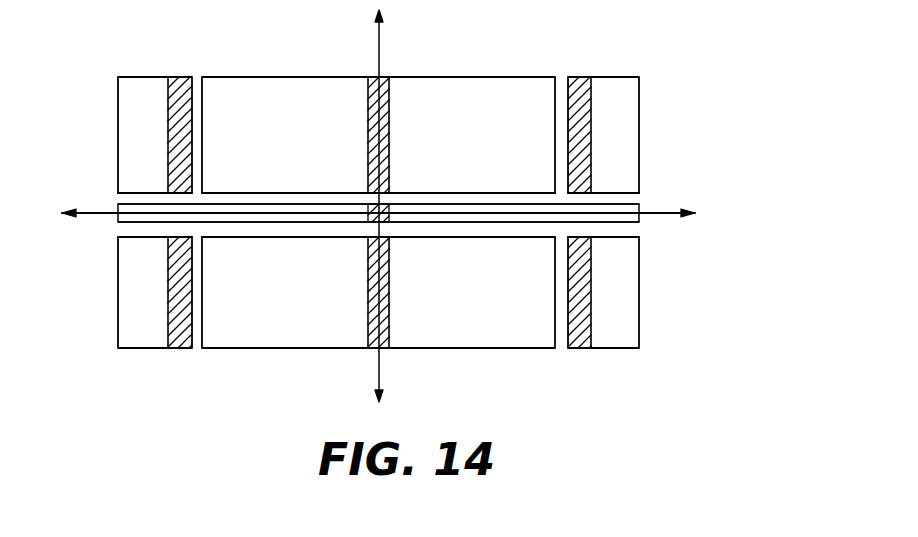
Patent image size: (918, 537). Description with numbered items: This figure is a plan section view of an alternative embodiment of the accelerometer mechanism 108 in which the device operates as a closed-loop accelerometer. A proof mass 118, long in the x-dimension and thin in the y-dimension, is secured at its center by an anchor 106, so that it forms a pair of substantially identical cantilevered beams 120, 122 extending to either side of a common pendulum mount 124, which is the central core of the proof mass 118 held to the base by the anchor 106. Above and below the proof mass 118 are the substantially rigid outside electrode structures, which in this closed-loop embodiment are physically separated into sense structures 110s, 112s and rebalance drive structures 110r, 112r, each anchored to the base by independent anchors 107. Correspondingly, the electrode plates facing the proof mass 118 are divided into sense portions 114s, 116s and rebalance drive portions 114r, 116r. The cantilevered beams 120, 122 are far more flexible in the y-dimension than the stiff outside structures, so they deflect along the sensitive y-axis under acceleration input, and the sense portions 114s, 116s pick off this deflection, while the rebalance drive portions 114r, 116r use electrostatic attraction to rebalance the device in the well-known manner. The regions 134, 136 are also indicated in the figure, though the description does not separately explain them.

The anchor 106 is at (370, 216).
The anchors 107 is at (166, 90).
The accelerometer mechanism 108 is at (708, 171).
The rebalance drive structure 110r is at (118, 97).
The sense structure 110s is at (500, 77).
The rebalance drive structure 112r is at (118, 328).
The sense structure 112s is at (497, 350).
The rebalance drive portion 114r is at (127, 192).
The sense portion 114s is at (254, 193).
The rebalance drive portion 116r is at (628, 232).
The sense portion 116s is at (270, 237).
The proof mass 118 is at (661, 233).
The cantilevered beam 120 is at (640, 220).
The cantilevered beam 122 is at (118, 205).
The common pendulum mount 124 is at (368, 206).
The upper gap region 134 is at (517, 198).
The lower gap region 136 is at (520, 236).